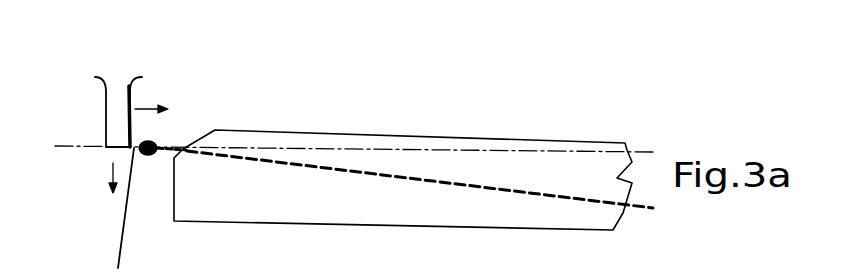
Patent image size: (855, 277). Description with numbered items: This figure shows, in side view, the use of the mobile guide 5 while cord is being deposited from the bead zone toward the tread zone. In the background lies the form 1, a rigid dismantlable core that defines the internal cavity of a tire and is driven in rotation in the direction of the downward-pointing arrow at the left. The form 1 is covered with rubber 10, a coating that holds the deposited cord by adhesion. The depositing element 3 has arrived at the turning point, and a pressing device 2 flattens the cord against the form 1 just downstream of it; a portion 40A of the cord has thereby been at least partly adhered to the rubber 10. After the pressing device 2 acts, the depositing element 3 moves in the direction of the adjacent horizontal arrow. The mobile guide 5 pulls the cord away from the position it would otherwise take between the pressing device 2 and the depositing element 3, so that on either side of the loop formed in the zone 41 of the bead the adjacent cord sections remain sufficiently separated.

The form 1 is at (320, 113).
The pressing device 2 is at (145, 152).
The depositing element 3 is at (112, 107).
The mobile guide 5 is at (498, 170).
The rubber 10 is at (585, 113).
The portion of the cord 40A is at (363, 173).
The zone of the bead 41 is at (172, 148).